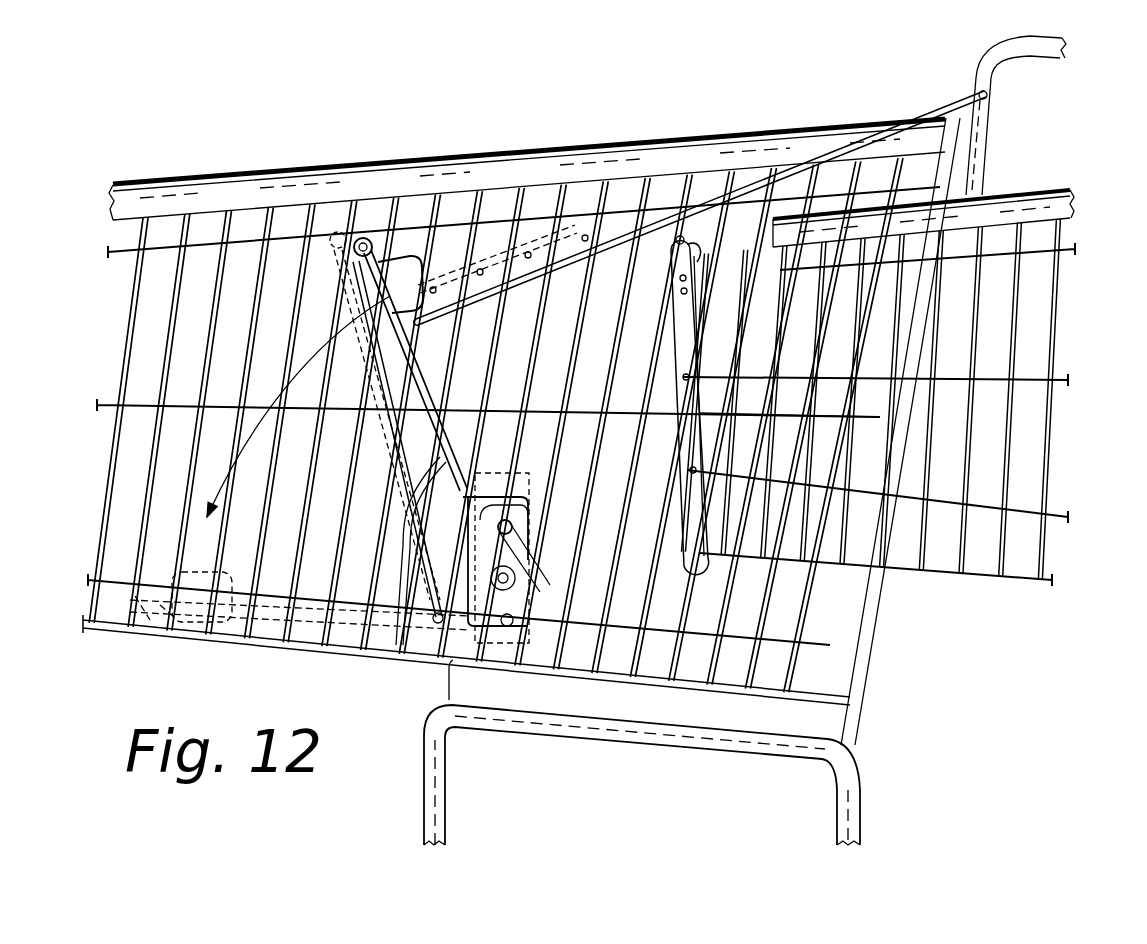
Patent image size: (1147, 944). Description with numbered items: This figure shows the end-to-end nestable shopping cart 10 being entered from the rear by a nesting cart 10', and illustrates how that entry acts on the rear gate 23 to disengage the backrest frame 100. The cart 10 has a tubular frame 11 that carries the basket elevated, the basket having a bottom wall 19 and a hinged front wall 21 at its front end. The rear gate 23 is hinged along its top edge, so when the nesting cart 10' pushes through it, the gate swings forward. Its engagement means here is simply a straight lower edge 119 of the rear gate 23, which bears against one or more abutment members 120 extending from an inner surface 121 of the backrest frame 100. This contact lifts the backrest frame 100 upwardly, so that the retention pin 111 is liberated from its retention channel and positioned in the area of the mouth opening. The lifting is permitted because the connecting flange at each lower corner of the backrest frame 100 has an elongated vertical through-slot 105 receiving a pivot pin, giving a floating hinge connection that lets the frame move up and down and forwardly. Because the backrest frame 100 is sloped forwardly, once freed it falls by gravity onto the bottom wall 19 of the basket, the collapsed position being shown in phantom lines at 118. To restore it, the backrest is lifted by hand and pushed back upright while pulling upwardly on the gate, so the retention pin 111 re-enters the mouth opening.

The end-to-end nestable shopping cart 10 is at (577, 390).
The nesting cart 10' is at (888, 352).
The frame 11 is at (866, 820).
The bottom wall 19 is at (986, 578).
The front wall 21 is at (676, 432).
The rear gate 23 is at (660, 215).
The backrest frame 100 is at (435, 570).
The vertical through-slot 105 is at (507, 535).
The retention pin 111 is at (523, 463).
The collapsed backrest frame position 118 is at (258, 648).
The straight lower edge 119 is at (437, 280).
The abutment member 120 is at (370, 245).
The inner surface 121 is at (413, 367).